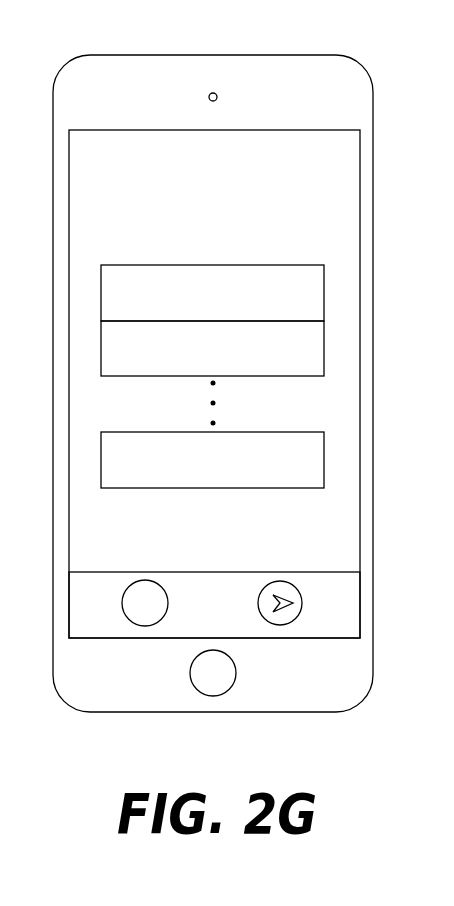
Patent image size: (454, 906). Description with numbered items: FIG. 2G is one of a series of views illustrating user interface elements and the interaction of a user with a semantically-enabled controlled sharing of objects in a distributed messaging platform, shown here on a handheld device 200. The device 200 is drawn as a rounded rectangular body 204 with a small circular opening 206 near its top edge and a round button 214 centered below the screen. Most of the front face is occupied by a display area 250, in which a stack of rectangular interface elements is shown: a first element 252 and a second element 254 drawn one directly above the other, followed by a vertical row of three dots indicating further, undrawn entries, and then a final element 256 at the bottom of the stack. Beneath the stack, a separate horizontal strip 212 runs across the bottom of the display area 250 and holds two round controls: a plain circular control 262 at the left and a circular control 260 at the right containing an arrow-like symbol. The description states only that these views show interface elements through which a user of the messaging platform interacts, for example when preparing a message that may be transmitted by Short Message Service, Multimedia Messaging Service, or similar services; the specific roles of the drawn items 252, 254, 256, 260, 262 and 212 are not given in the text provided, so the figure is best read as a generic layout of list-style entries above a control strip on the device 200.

The electronic device 200 is at (207, 23).
The housing 204 is at (374, 123).
The camera 206 is at (217, 94).
The input toolbar region 212 is at (359, 588).
The home button 214 is at (222, 695).
The display / user interface 250 is at (360, 518).
The first list item 252 is at (324, 290).
The second list item 254 is at (324, 365).
The last list item 256 is at (324, 468).
The send button 260 is at (302, 598).
The button 262 is at (122, 598).